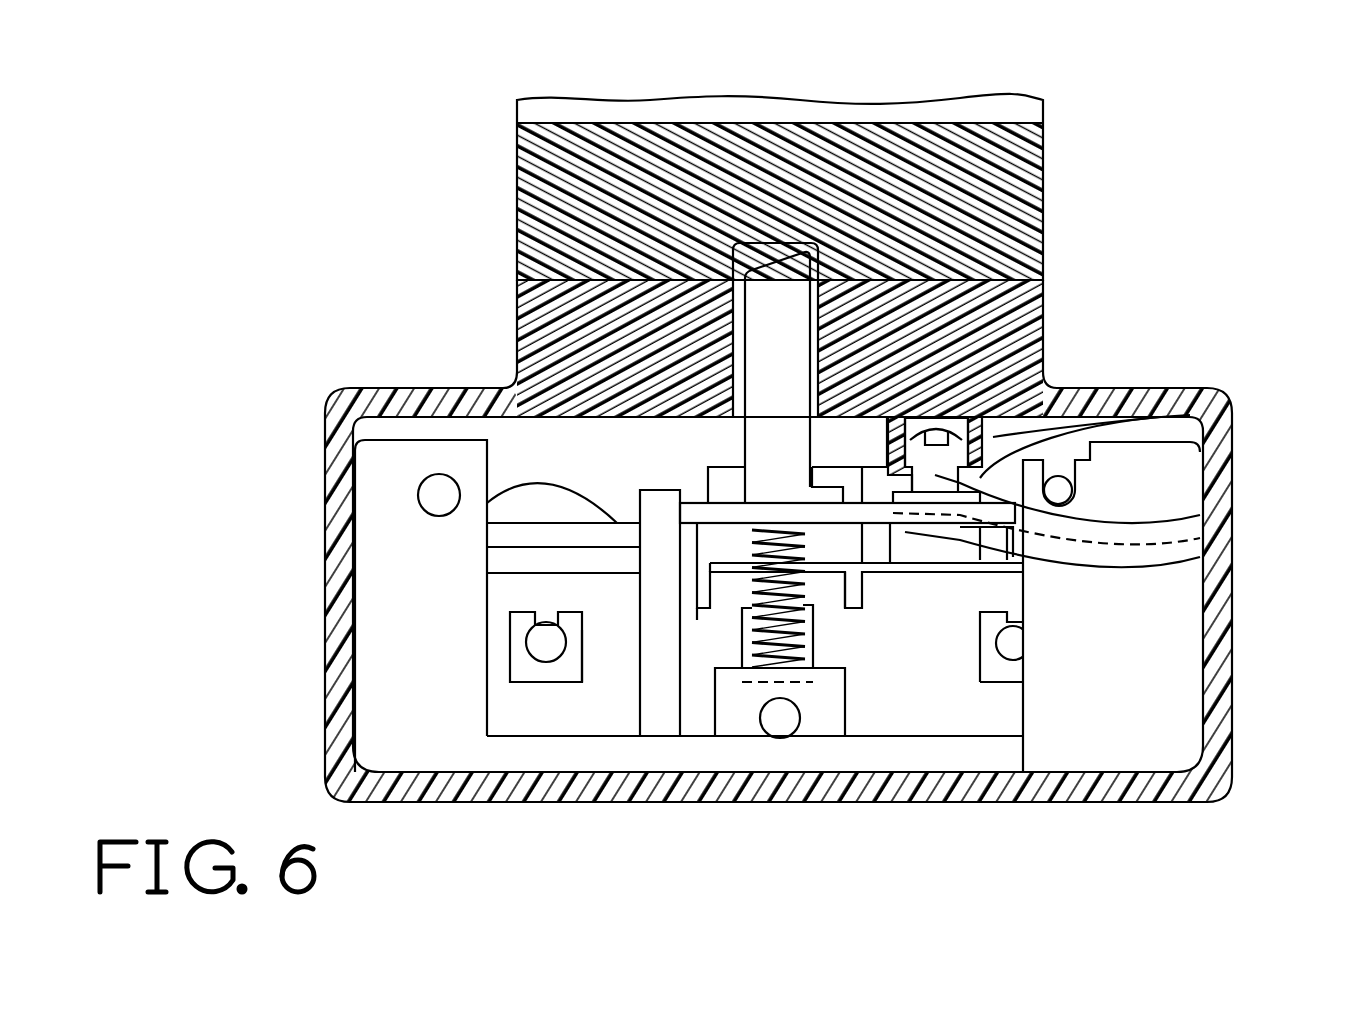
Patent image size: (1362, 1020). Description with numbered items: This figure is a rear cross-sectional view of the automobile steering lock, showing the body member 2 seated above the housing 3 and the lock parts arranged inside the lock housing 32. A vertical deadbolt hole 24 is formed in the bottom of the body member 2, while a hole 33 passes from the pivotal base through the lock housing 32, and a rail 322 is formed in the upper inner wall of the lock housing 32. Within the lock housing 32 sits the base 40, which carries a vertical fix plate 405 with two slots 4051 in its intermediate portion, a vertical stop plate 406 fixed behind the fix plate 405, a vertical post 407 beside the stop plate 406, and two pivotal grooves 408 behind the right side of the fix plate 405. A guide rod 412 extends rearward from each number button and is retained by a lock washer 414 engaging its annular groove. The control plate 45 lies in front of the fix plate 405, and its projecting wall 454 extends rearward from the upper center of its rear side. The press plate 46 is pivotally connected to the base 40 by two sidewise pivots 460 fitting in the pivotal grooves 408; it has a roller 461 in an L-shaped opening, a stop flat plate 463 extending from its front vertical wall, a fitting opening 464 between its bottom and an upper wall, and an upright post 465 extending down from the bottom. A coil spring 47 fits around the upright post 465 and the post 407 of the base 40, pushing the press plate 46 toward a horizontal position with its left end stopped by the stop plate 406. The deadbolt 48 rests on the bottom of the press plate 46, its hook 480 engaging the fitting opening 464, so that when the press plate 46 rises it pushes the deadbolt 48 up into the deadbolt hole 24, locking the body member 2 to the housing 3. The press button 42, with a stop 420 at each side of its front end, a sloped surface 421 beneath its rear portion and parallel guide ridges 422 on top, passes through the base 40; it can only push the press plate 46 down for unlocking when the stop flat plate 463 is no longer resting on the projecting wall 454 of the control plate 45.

The body member 2 is at (1045, 152).
The housing 3 is at (1046, 297).
The deadbolt hole 24 is at (757, 240).
The hole 33 is at (840, 281).
The hook 480 is at (825, 492).
The rail 322 is at (968, 462).
The press button 42 is at (995, 460).
The stop 420 is at (980, 445).
The pivotal grooves 408 is at (1058, 490).
The sidewise pivots 460 is at (1190, 415).
The guide ridges 422 is at (1232, 480).
The sloped surface 421 is at (1232, 530).
The roller 461 is at (1232, 560).
The lock housing 32 is at (1233, 668).
The deadbolt 48 is at (763, 350).
The vertical stop plate 406 is at (660, 493).
The control plate 45 is at (502, 537).
The base 40 is at (373, 566).
The vertical fix plate 405 is at (498, 627).
The guide rod 412 is at (543, 650).
The lock washer 414 is at (563, 676).
The projecting wall 454 is at (712, 548).
The slots 4051 is at (700, 620).
The stop flat plate 463 is at (735, 513).
The vertical post 407 is at (780, 643).
The coil spring 47 is at (768, 545).
The upright post 465 is at (857, 480).
The fitting opening 464 is at (902, 517).
The press plate 46 is at (843, 488).